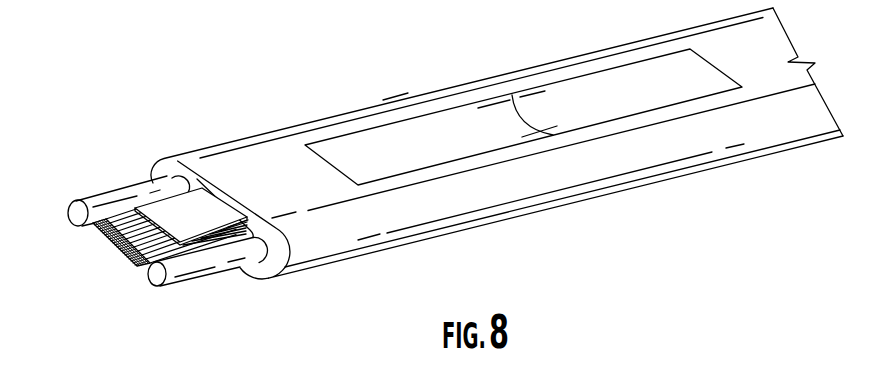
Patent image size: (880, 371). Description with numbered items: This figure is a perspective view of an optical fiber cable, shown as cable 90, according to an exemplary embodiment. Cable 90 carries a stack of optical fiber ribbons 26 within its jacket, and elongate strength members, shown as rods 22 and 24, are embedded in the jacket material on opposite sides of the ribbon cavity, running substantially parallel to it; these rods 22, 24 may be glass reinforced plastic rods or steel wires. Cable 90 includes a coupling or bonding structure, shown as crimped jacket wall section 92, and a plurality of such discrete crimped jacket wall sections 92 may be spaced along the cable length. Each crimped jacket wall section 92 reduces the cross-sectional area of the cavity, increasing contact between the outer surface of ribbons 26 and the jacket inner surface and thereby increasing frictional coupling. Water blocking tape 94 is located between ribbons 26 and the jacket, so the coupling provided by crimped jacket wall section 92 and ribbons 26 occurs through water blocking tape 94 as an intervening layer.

The cable 90 is at (98, 172).
The crimped jacket wall section 92 is at (388, 148).
The water blocking tape 94 is at (177, 218).
The rod 22 is at (73, 216).
The rod 24 is at (157, 273).
The ribbon 26 is at (117, 251).